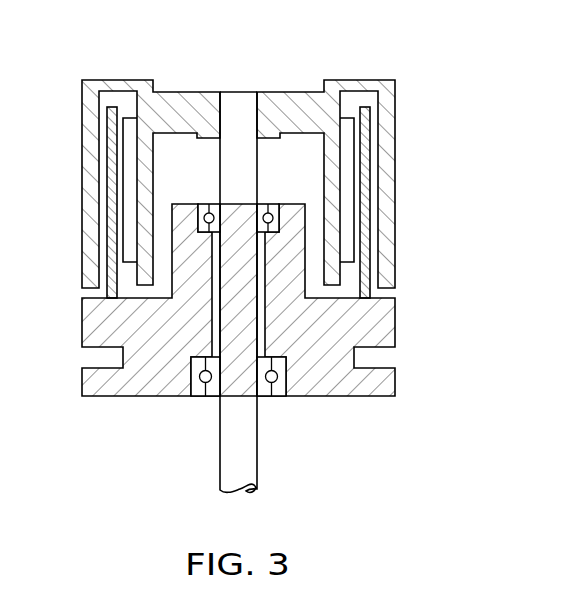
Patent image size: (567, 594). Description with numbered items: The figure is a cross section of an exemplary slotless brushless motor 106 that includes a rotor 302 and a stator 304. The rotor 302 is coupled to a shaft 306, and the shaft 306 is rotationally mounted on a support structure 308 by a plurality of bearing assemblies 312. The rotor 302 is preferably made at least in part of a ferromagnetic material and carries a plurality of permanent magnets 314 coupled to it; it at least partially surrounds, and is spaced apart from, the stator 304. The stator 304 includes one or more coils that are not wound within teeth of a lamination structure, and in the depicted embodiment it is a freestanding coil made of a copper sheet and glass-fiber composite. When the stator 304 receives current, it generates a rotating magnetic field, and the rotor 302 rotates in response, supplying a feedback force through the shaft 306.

The motor 106 is at (268, 257).
The rotor 302 is at (146, 80).
The stator 304 is at (110, 107).
The shaft 306 is at (240, 98).
The support structure 308 is at (88, 330).
The bearing assemblies 312 is at (203, 205).
The permanent magnets 314 is at (132, 118).